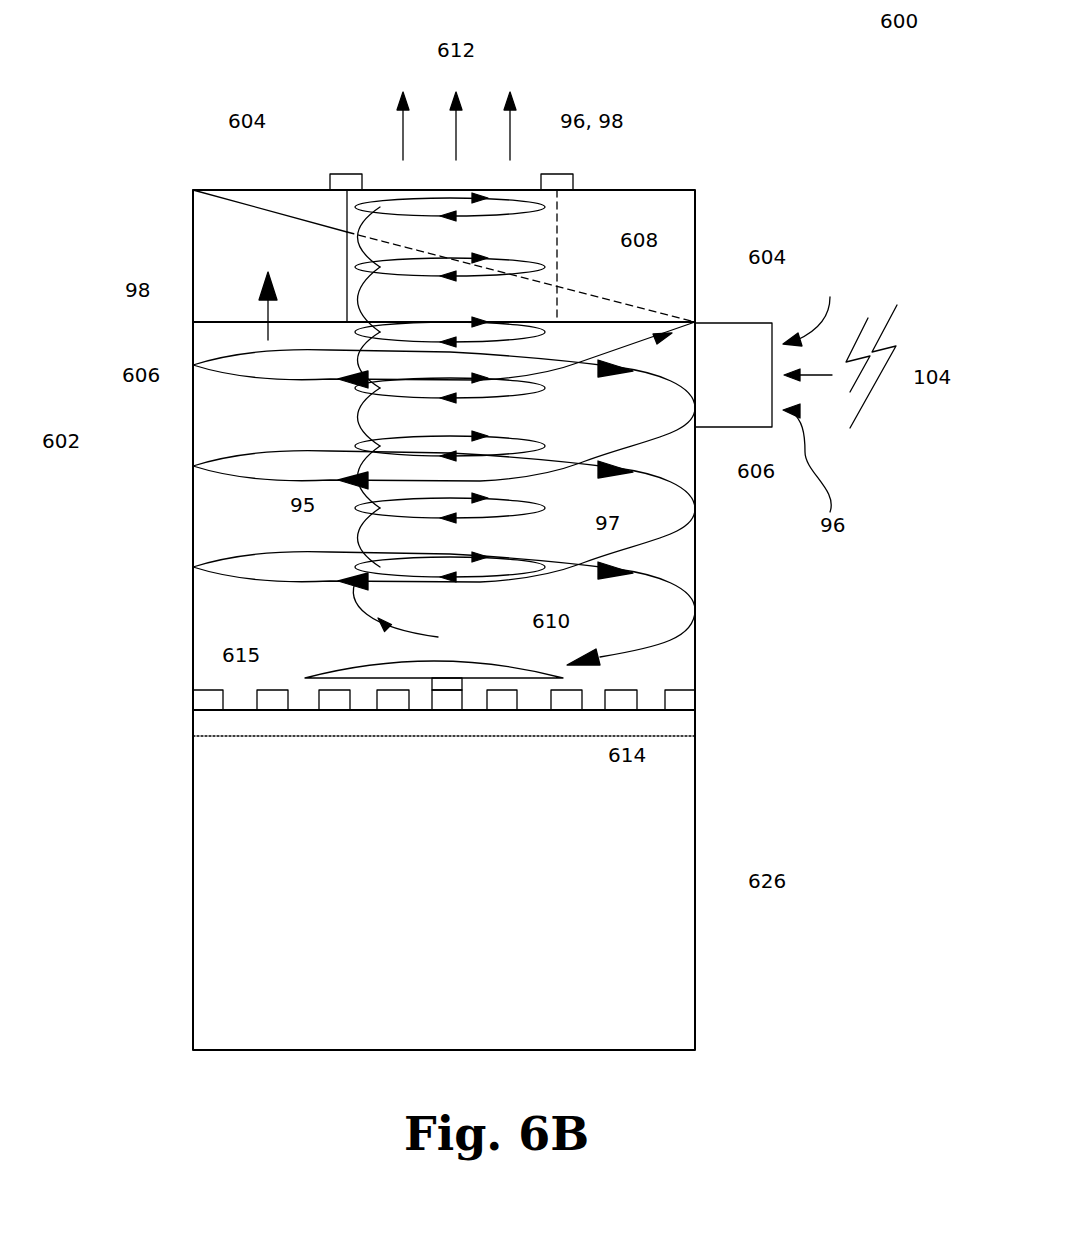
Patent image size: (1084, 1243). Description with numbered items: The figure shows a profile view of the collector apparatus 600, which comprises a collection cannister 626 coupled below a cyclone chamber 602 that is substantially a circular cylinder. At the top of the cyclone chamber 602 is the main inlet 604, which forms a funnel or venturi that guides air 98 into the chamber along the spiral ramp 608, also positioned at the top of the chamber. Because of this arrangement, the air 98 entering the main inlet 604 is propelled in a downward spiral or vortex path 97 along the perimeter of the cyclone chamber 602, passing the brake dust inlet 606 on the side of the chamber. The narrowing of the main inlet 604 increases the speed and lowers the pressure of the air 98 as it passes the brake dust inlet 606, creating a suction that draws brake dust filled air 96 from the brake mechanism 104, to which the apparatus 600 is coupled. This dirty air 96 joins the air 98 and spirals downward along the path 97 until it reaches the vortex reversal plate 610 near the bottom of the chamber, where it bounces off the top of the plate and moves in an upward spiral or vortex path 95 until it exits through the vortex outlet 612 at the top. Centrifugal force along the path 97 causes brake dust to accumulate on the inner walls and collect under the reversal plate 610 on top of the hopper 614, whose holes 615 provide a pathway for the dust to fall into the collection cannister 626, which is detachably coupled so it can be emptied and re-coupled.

The collector apparatus 600 is at (786, 40).
The cyclone chamber 602 is at (118, 690).
The main inlet 604 is at (709, 322).
The brake dust inlet 606 is at (185, 322).
The spiral ramp 608 is at (600, 292).
The vortex reversal plate 610 is at (483, 662).
The vortex outlet 612 is at (510, 86).
The hopper 614 is at (680, 712).
The holes 615 is at (257, 690).
The collection cannister 626 is at (708, 1050).
The upward vortex path 95 is at (357, 516).
The brake dust filled air 96 is at (510, 143).
The downward vortex path 97 is at (668, 493).
The air 98 is at (260, 318).
The brake mechanism 104 is at (871, 362).